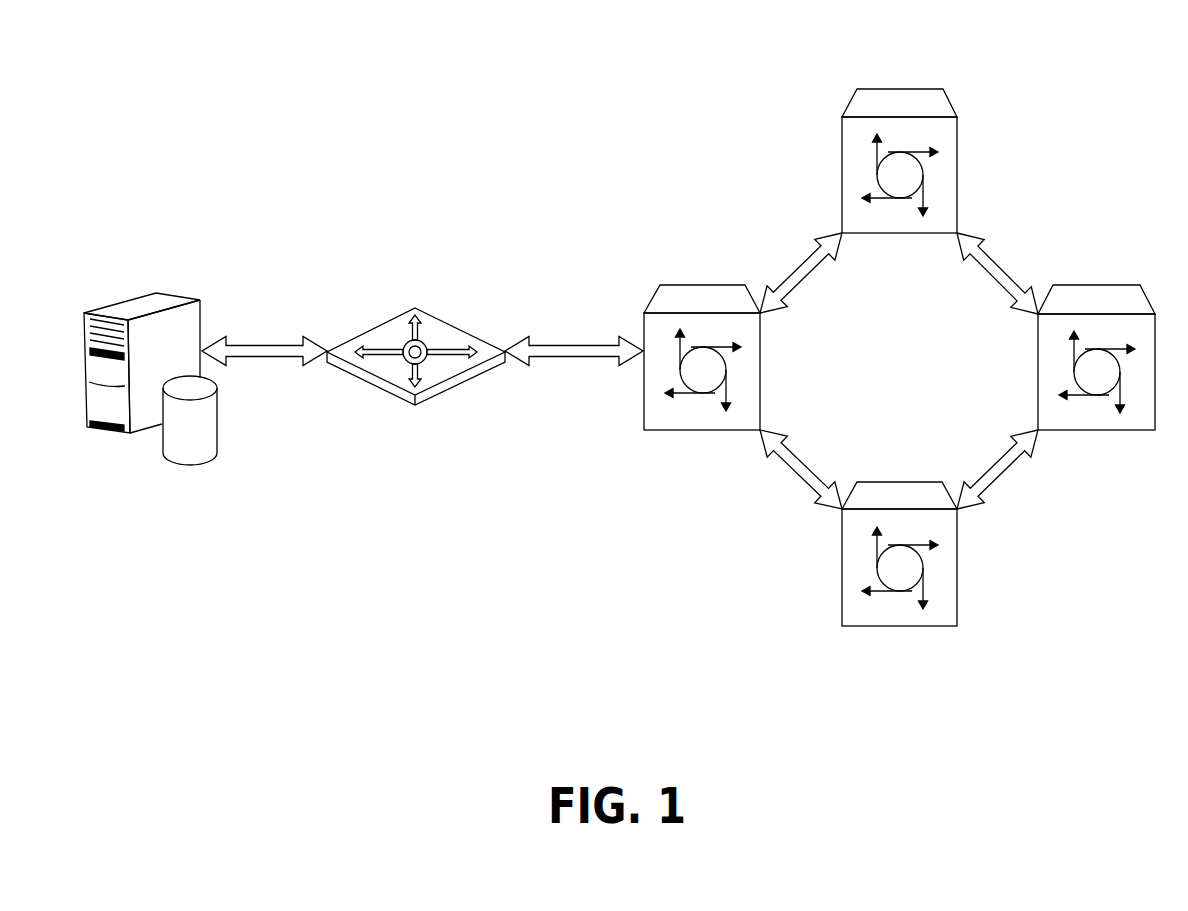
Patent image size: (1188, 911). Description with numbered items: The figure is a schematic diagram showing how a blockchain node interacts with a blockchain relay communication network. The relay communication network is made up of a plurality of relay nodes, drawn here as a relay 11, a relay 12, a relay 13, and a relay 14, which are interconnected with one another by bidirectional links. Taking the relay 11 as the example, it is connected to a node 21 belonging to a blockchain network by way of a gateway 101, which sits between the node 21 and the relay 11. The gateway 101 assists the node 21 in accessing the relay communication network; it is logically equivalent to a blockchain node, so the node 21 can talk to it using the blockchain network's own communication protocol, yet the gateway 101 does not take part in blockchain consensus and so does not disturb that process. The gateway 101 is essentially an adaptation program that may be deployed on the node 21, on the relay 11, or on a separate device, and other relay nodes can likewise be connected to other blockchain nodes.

The node 21 is at (176, 300).
The gateway 101 is at (434, 320).
The relay 11 is at (700, 292).
The relay 12 is at (897, 95).
The relay 13 is at (897, 488).
The relay 14 is at (1093, 293).